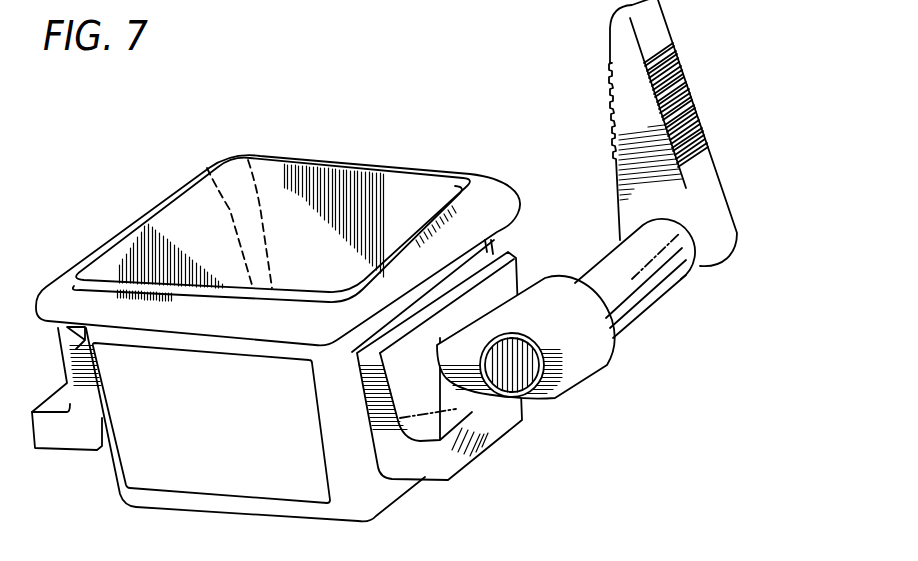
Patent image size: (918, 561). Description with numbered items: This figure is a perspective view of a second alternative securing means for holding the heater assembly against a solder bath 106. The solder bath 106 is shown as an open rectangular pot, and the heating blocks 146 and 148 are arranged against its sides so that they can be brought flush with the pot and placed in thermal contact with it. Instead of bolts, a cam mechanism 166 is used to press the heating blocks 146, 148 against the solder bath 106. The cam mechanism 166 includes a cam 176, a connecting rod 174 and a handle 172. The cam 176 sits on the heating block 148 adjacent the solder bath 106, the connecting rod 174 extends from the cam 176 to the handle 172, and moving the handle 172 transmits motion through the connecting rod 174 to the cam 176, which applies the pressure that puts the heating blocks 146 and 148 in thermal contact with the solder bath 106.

The solder bath 106 is at (170, 233).
The heating block 146 is at (75, 432).
The heating block 148 is at (470, 440).
The cam mechanism 166 is at (667, 333).
The handle 172 is at (633, 92).
The connecting rod 174 is at (658, 272).
The cam 176 is at (580, 367).